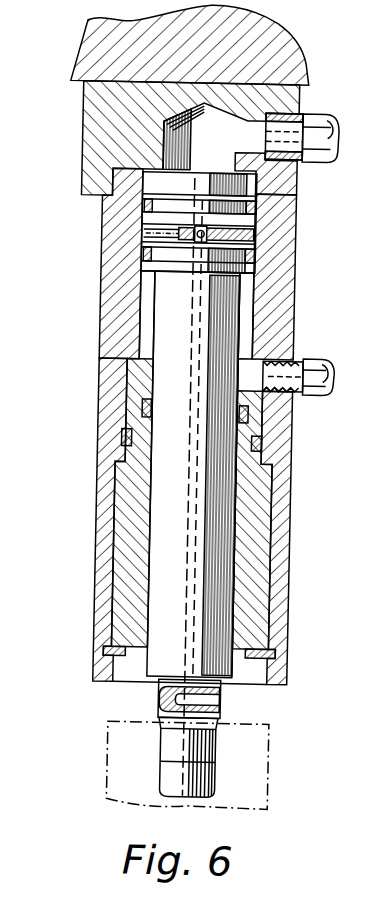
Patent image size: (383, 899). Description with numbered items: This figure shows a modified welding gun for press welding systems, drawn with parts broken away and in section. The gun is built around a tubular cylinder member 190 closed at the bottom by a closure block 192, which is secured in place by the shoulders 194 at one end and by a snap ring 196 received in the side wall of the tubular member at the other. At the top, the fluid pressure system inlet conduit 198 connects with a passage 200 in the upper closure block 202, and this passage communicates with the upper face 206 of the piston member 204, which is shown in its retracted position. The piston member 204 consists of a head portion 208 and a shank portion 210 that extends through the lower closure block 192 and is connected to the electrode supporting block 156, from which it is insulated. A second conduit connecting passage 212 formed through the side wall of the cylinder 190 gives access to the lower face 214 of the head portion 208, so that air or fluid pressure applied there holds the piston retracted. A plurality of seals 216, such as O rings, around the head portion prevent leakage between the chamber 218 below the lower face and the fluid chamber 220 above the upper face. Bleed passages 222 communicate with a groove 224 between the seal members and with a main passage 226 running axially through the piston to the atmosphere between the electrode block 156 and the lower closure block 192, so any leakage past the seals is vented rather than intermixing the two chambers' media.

The electrode supporting block 156 is at (132, 757).
The tubular cylinder member 190 is at (280, 305).
The closure block 192 is at (260, 505).
The shoulders 194 is at (273, 457).
The snap ring 196 is at (277, 655).
The fluid pressure system inlet conduit 198 is at (313, 117).
The passage 200 is at (254, 83).
The upper closure block 202 is at (103, 145).
The piston member 204 is at (160, 303).
The upper face 206 is at (182, 180).
The head portion 208 is at (160, 222).
The shank portion 210 is at (160, 475).
The second conduit connecting passage 212 is at (297, 357).
The lower face 214 is at (142, 283).
The seals 216 is at (260, 212).
The chamber 218 is at (252, 288).
The fluid chamber 220 is at (248, 172).
The bleed passages 222 is at (221, 475).
The groove 224 is at (257, 236).
The main passage 226 is at (190, 695).